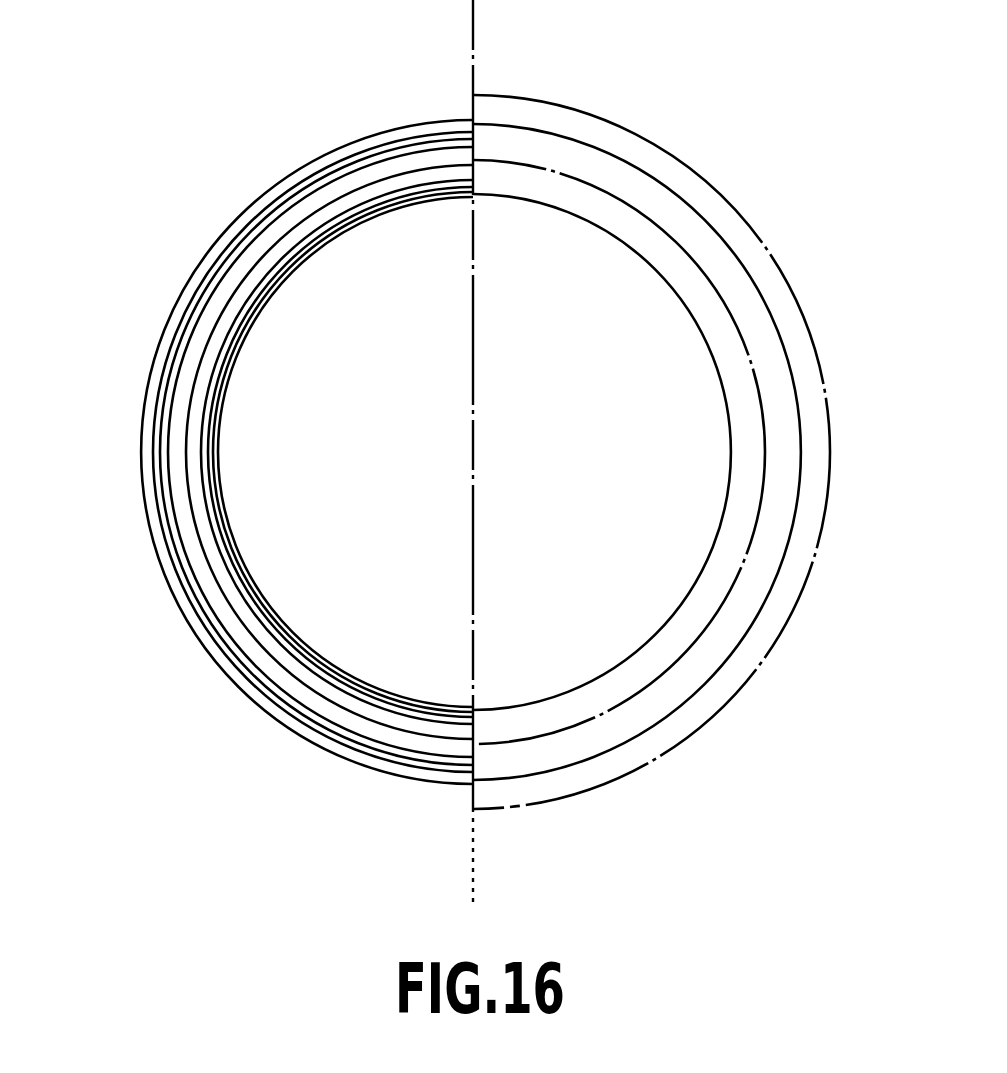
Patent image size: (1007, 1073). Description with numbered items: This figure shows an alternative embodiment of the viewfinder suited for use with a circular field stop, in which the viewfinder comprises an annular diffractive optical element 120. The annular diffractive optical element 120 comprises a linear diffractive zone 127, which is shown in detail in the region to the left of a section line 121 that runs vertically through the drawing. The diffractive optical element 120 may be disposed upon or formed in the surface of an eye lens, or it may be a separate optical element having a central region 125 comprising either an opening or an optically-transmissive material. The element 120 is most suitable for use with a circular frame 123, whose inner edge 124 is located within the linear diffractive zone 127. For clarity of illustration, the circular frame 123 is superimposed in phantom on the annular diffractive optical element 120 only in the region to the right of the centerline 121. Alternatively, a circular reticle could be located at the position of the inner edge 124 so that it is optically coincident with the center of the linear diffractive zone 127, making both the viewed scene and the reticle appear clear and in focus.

The annular diffractive optical element 120 is at (764, 294).
The section line 121 is at (474, 80).
The circular frame 123 is at (609, 778).
The inner edge 124 is at (727, 596).
The central region 125 is at (364, 485).
The linear diffractive zone 127 is at (185, 541).